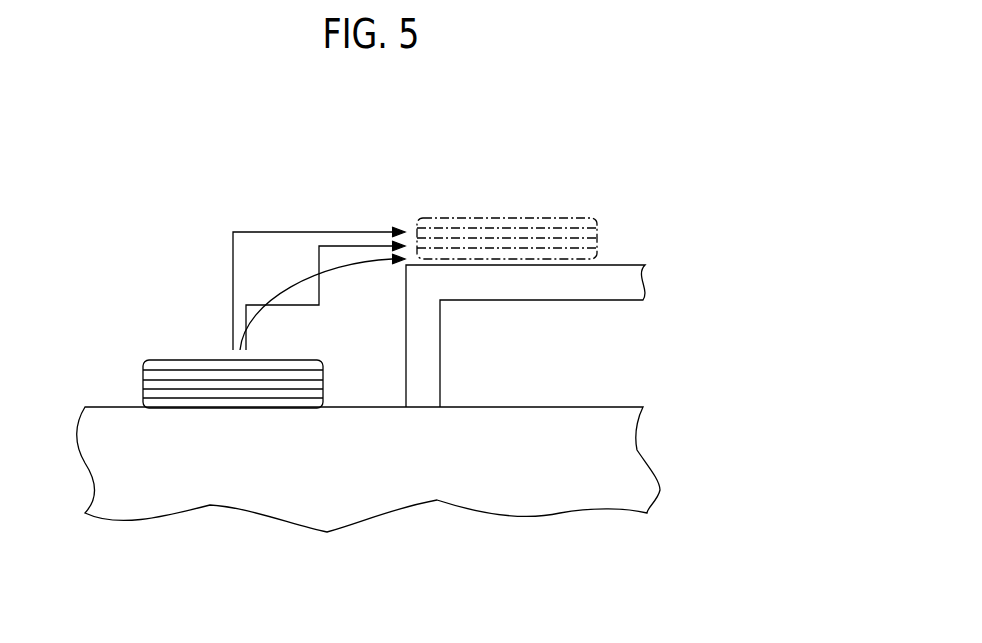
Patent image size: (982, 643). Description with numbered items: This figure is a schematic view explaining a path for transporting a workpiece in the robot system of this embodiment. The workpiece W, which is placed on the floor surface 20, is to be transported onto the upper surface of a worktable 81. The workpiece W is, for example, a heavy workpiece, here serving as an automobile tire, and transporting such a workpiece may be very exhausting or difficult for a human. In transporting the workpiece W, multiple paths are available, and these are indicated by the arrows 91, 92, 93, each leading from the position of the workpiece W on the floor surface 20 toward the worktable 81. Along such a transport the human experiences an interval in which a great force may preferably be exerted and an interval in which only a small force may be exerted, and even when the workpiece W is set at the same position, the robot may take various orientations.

The floor surface 20 is at (618, 407).
The workpiece W is at (163, 359).
The worktable 81 is at (622, 277).
The arrow 91 is at (265, 231).
The arrow 92 is at (290, 287).
The arrow 93 is at (310, 305).